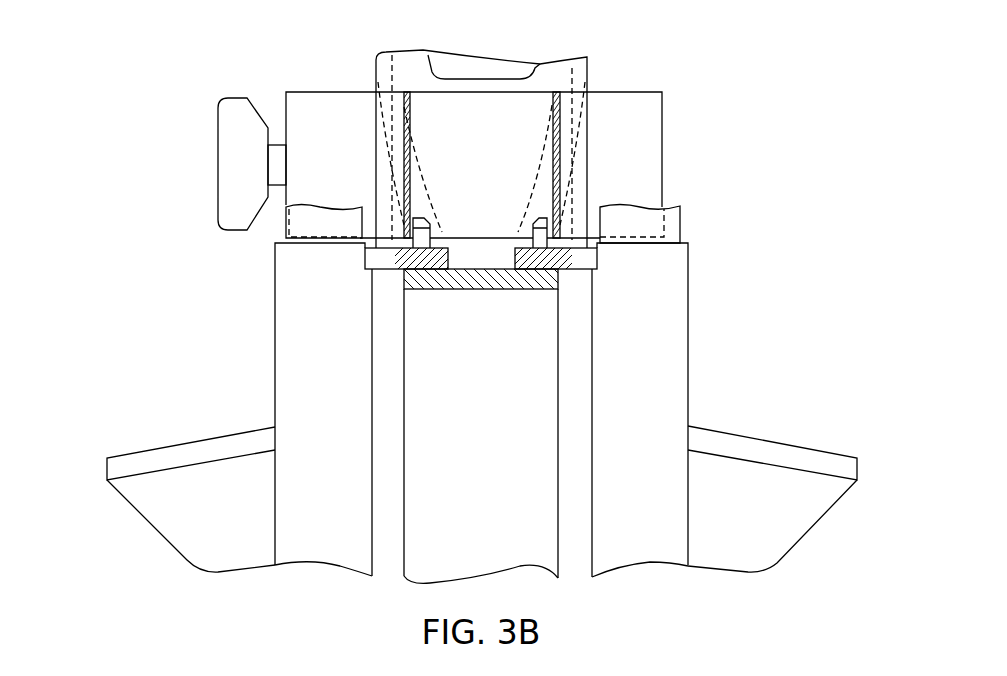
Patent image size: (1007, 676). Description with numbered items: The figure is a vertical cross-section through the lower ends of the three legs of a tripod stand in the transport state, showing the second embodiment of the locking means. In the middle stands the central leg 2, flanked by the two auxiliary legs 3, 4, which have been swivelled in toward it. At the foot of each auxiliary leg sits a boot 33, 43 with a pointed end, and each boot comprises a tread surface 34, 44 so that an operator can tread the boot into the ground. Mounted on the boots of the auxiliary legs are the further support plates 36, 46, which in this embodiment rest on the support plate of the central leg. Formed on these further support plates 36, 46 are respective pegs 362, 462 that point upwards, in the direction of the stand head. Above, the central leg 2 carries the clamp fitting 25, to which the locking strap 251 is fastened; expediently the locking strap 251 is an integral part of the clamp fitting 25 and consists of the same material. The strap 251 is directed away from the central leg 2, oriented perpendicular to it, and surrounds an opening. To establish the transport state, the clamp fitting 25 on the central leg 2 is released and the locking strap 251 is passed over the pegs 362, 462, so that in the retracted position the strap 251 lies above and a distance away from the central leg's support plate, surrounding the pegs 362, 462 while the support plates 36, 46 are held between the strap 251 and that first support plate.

The central leg 2 is at (488, 395).
The auxiliary leg 3 is at (648, 371).
The auxiliary leg 4 is at (333, 371).
The clamp fitting 25 is at (653, 130).
The locking strap 251 is at (555, 92).
The boot 33 is at (772, 499).
The tread surface 34 is at (776, 514).
The further support plate 36 is at (587, 262).
The boot 43 is at (191, 499).
The tread surface 44 is at (253, 514).
The further support plate 46 is at (380, 258).
The peg 362 is at (543, 230).
The peg 462 is at (412, 226).